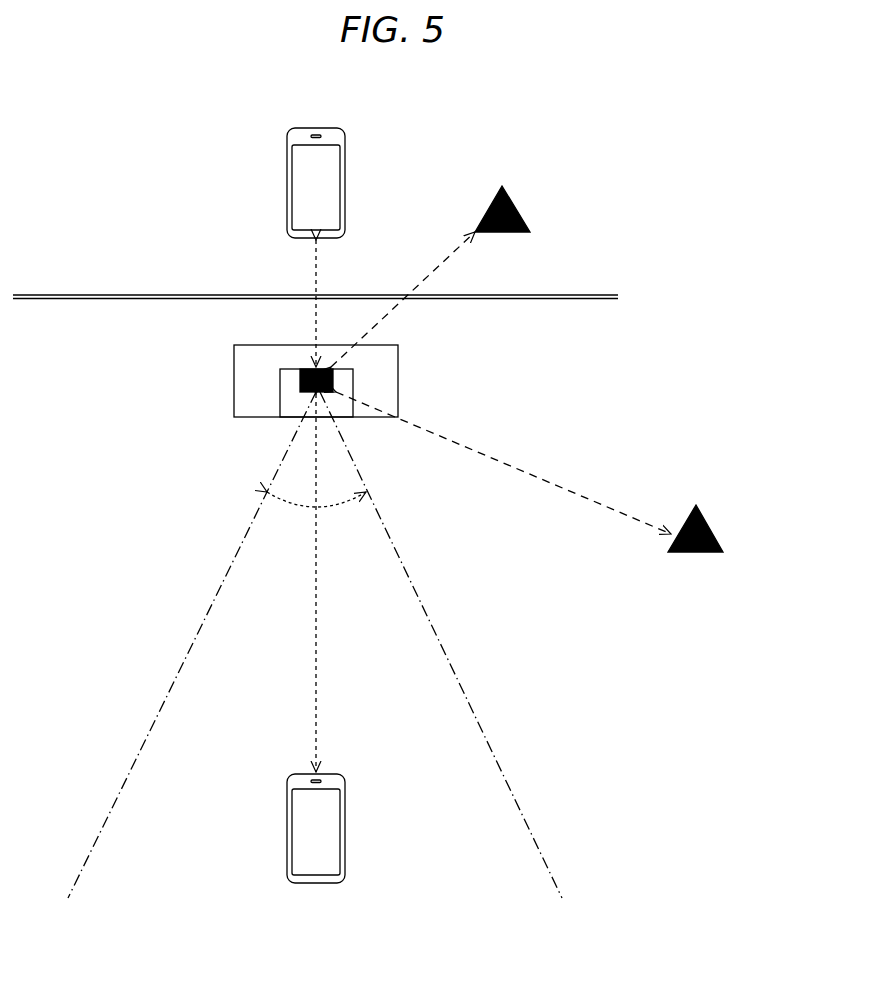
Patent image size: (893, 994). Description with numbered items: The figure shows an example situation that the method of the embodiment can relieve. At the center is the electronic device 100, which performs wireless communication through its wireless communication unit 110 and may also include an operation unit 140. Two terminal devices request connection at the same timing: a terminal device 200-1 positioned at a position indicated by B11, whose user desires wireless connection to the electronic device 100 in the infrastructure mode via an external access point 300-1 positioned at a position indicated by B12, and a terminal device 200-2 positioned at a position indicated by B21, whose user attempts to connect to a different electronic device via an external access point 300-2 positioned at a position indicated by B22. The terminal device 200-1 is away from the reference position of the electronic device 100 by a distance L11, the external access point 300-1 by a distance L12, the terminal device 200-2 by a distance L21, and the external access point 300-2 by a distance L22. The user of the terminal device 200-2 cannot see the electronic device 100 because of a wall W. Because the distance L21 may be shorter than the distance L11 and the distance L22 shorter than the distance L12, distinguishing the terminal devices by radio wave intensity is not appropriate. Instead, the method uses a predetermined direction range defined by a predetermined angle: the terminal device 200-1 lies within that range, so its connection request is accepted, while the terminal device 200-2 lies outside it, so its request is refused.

The electronic device 100 is at (400, 372).
The wireless communication unit 110 is at (300, 381).
The operation unit 140 is at (282, 393).
The terminal device 200-1 is at (318, 884).
The terminal device 200-2 is at (316, 128).
The external access point 300-1 is at (712, 527).
The external access point 300-2 is at (520, 211).
The wall W is at (584, 301).
The distance L11 is at (338, 583).
The distance L12 is at (503, 463).
The distance L21 is at (295, 303).
The distance L22 is at (403, 296).
The position B11 is at (259, 849).
The position B12 is at (676, 561).
The position B21 is at (266, 170).
The position B22 is at (537, 229).